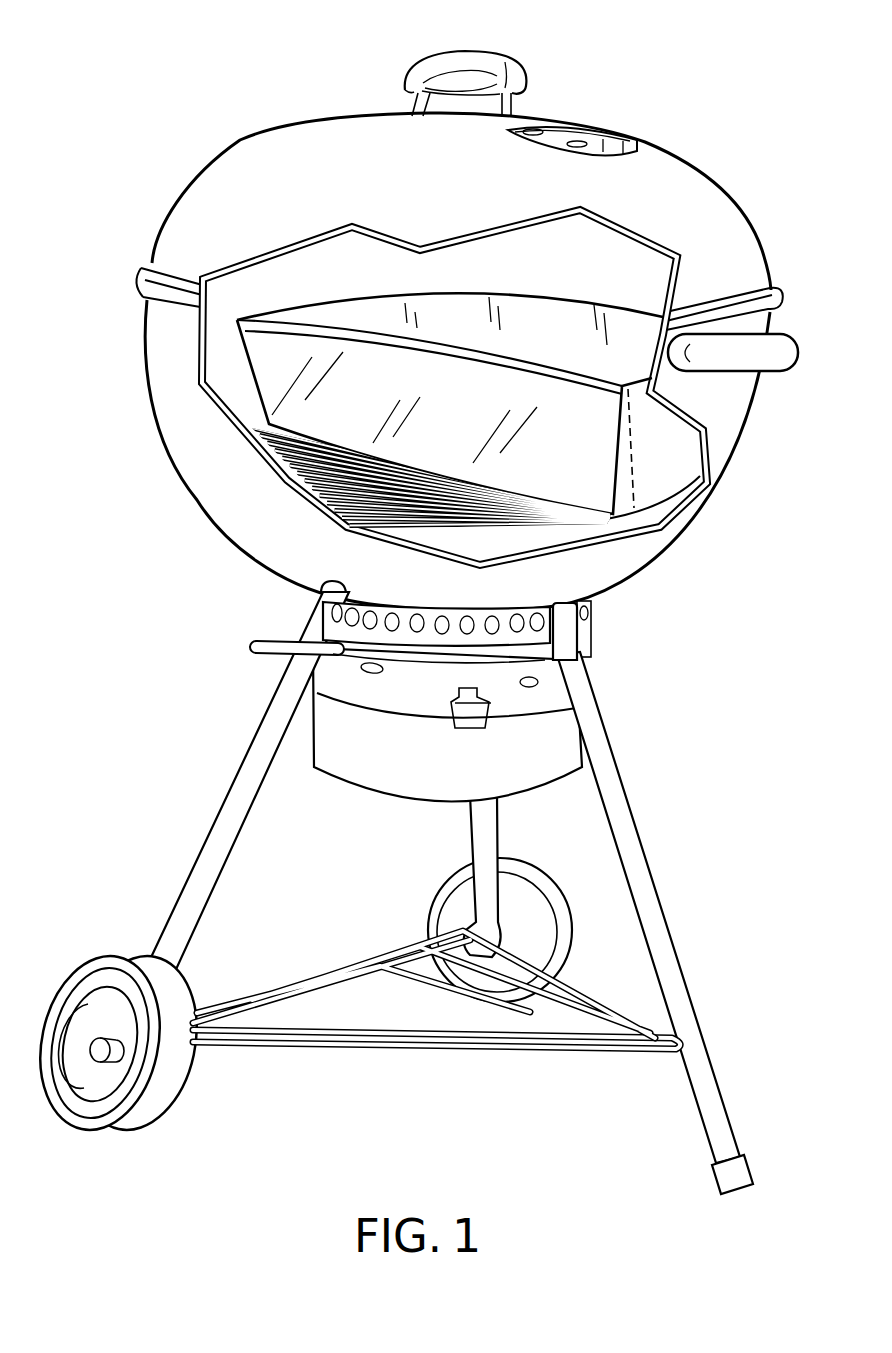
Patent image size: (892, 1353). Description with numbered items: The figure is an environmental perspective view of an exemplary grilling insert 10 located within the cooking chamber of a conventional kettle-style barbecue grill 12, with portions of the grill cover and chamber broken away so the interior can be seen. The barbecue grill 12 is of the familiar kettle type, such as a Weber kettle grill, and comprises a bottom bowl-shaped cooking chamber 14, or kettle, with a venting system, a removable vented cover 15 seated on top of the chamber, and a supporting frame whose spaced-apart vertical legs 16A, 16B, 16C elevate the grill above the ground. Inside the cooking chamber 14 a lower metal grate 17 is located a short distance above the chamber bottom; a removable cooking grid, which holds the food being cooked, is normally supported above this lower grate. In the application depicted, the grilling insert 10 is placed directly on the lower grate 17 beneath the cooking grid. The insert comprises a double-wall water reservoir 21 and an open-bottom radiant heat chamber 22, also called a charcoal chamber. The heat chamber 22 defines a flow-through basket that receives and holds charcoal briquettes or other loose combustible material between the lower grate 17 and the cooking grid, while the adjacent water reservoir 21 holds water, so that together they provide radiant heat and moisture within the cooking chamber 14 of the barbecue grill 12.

The grilling insert 10 is at (450, 341).
The barbecue grill 12 is at (411, 622).
The cooking chamber 14 is at (226, 397).
The vented cover 15 is at (197, 215).
The vertical leg 16A is at (215, 818).
The vertical leg 16B is at (468, 828).
The vertical leg 16C is at (648, 843).
The lower metal grate 17 is at (340, 478).
The double-wall water reservoir 21 is at (530, 380).
The radiant heat chamber 22 is at (553, 316).